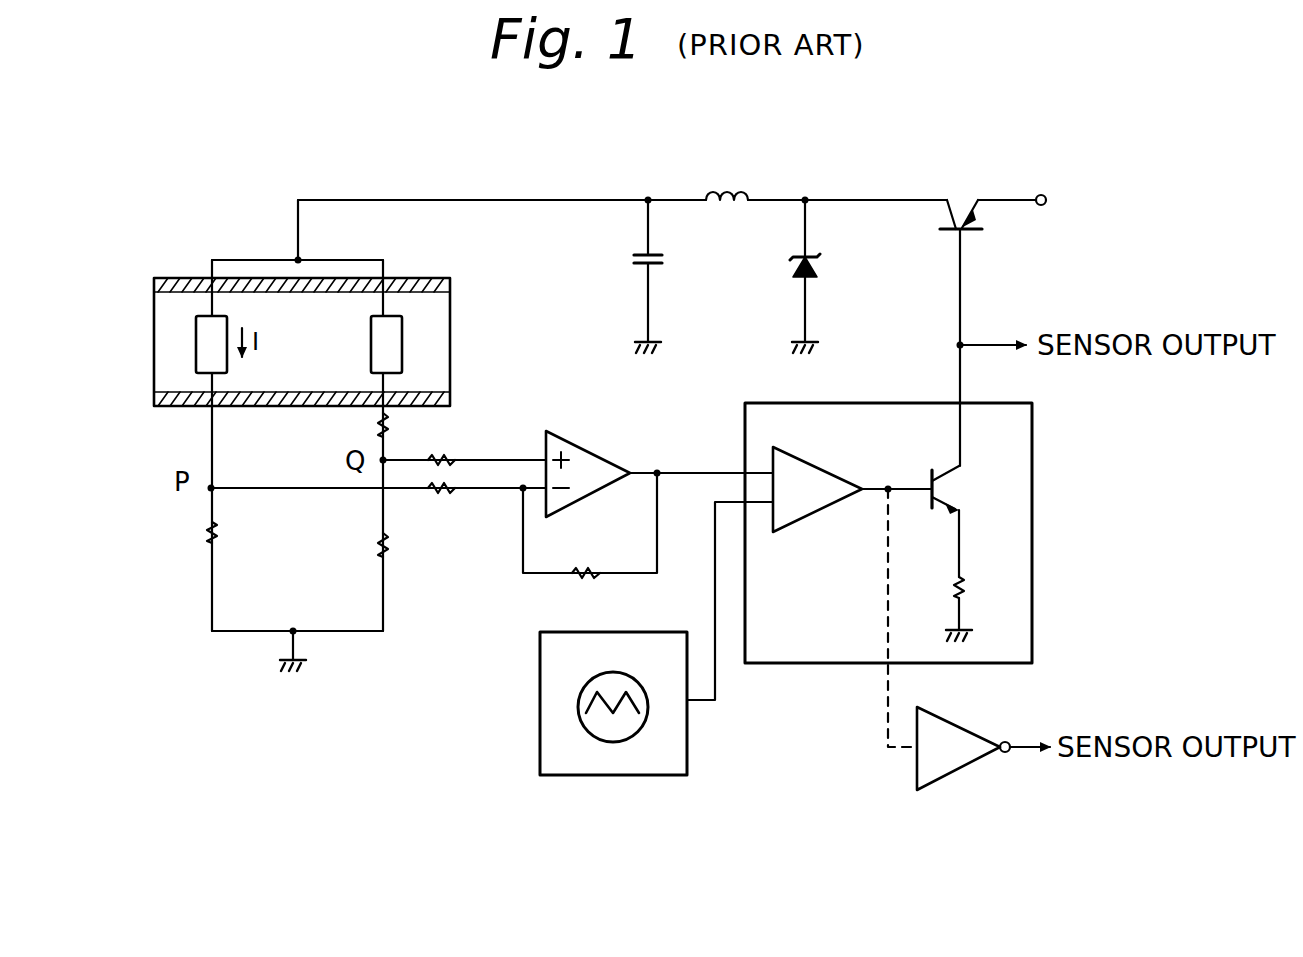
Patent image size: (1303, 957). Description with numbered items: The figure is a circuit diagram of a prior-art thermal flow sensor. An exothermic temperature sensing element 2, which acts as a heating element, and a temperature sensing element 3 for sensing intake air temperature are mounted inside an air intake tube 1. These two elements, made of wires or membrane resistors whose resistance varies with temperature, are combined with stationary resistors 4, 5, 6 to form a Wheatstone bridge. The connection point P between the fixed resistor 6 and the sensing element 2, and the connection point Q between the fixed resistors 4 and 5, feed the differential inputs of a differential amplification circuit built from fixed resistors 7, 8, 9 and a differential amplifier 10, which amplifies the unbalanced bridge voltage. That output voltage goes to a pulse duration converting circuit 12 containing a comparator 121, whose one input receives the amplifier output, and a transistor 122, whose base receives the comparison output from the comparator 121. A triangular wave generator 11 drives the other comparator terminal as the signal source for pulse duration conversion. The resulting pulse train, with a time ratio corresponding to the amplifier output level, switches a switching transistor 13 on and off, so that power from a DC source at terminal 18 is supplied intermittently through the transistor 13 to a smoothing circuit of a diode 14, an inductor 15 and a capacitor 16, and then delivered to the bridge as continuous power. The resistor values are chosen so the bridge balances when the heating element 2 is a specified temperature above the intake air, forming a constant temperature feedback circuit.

The air intake tube 1 is at (428, 276).
The exothermic temperature sensing element 2 is at (196, 336).
The temperature sensing element 3 is at (403, 338).
The stationary resistor 4 is at (378, 424).
The stationary resistor 5 is at (376, 546).
The stationary resistor 6 is at (218, 533).
The fixed resistor 7 is at (442, 454).
The fixed resistor 8 is at (442, 494).
The fixed resistor 9 is at (584, 579).
The differential amplifier 10 is at (594, 447).
The triangular wave generator 11 is at (628, 776).
The pulse duration converting circuit 12 is at (1033, 487).
The switching transistor 13 is at (972, 236).
The diode 14 is at (818, 264).
The inductor 15 is at (728, 194).
The capacitor 16 is at (664, 257).
The terminal 18 is at (1045, 195).
The comparator 121 is at (812, 456).
The transistor 122 is at (942, 471).